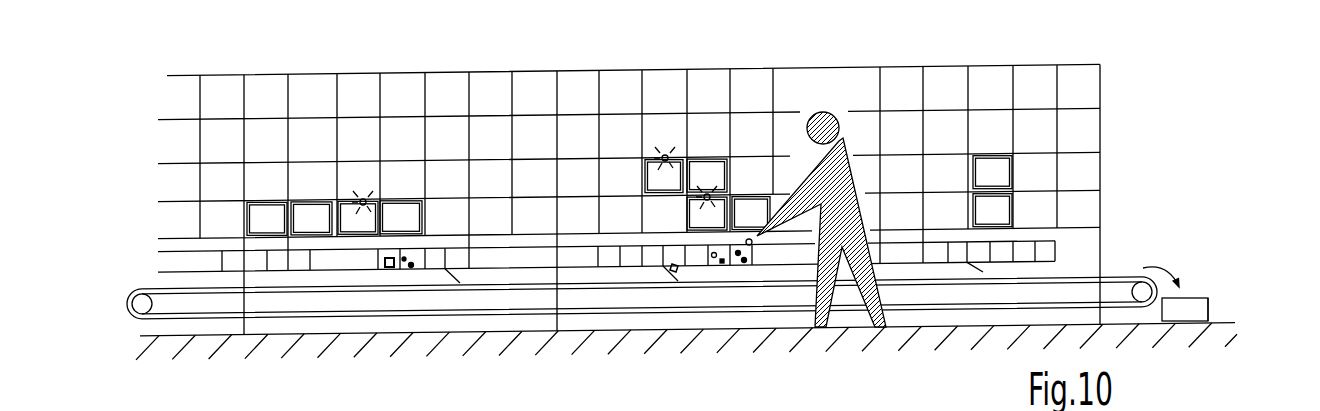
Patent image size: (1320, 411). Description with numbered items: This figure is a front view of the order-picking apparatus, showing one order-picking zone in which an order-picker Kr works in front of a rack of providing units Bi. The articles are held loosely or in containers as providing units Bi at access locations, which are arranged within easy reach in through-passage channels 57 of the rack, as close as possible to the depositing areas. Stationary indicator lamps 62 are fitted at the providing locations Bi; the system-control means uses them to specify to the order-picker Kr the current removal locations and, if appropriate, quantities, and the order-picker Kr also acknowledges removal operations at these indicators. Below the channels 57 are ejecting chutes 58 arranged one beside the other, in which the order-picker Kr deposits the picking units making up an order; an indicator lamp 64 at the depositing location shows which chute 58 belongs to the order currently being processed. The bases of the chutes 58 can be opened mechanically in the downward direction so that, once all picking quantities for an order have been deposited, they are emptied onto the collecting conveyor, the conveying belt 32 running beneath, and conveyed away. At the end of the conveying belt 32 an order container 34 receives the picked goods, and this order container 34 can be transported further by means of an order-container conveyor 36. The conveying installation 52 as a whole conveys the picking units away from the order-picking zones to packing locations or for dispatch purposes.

The conveying belt 32 is at (1106, 275).
The order container 34 is at (1182, 308).
The order-container conveyor 36 is at (1207, 307).
The conveying installation 52 is at (1227, 143).
The through-passage channel 57 is at (261, 218).
The ejecting chute 58 is at (389, 274).
The indicator lamp 62 is at (363, 199).
The indicator lamp 64 is at (752, 246).
The providing unit Bi is at (268, 218).
The order-picker Kr is at (843, 138).